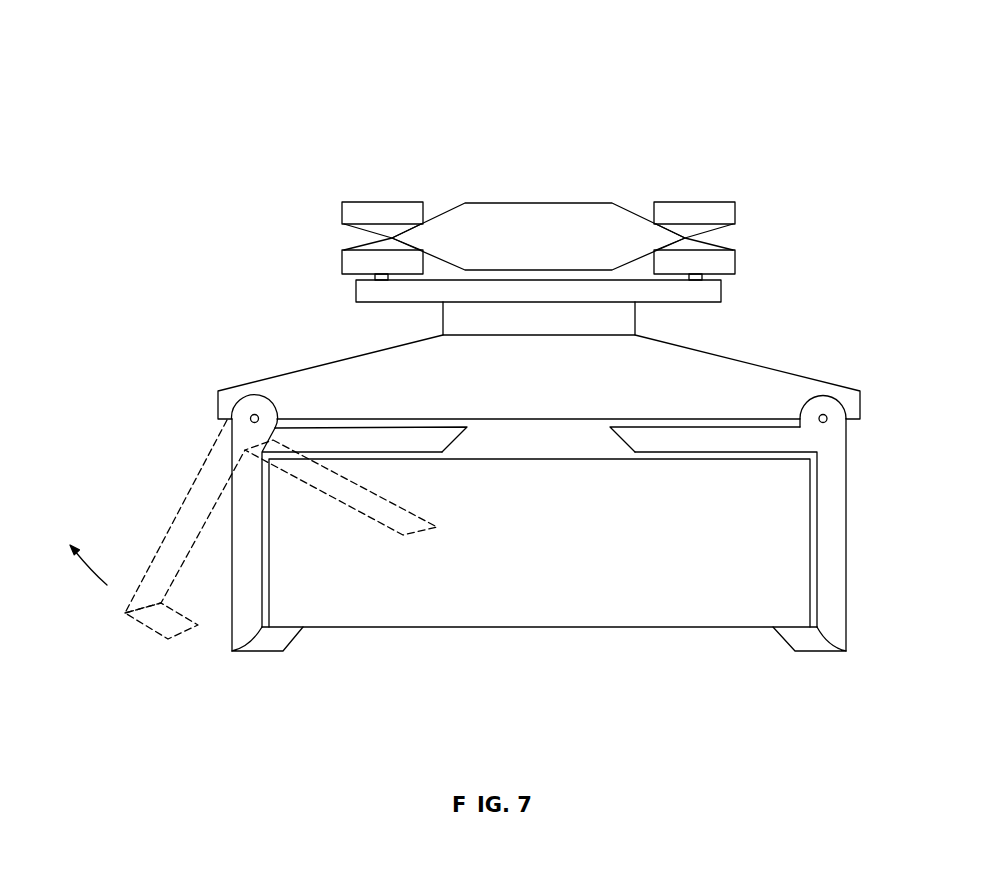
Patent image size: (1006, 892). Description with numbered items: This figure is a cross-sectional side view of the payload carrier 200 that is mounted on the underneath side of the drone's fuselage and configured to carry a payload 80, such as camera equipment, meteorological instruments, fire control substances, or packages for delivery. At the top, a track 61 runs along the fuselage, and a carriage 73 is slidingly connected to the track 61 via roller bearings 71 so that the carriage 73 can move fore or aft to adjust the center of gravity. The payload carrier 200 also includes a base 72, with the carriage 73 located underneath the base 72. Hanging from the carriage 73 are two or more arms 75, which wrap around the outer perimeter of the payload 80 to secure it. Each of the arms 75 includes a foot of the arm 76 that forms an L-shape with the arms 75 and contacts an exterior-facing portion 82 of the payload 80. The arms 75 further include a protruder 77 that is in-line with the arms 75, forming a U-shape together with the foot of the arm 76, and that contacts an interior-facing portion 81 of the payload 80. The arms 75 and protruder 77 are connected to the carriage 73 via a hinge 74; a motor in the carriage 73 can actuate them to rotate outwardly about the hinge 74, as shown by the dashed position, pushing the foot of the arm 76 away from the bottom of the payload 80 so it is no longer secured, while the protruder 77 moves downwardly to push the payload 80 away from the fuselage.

The payload carrier 200 is at (112, 120).
The track 61 is at (535, 206).
The roller bearings 71 is at (350, 202).
The base 72 is at (703, 303).
The carriage 73 is at (860, 405).
The hinge 74 is at (826, 422).
The arms 75 is at (847, 550).
The foot of the arm 76 is at (255, 653).
The protruder 77 is at (417, 513).
The payload 80 is at (712, 543).
The interior-facing portion 81 is at (582, 460).
The exterior-facing portion 82 is at (547, 627).